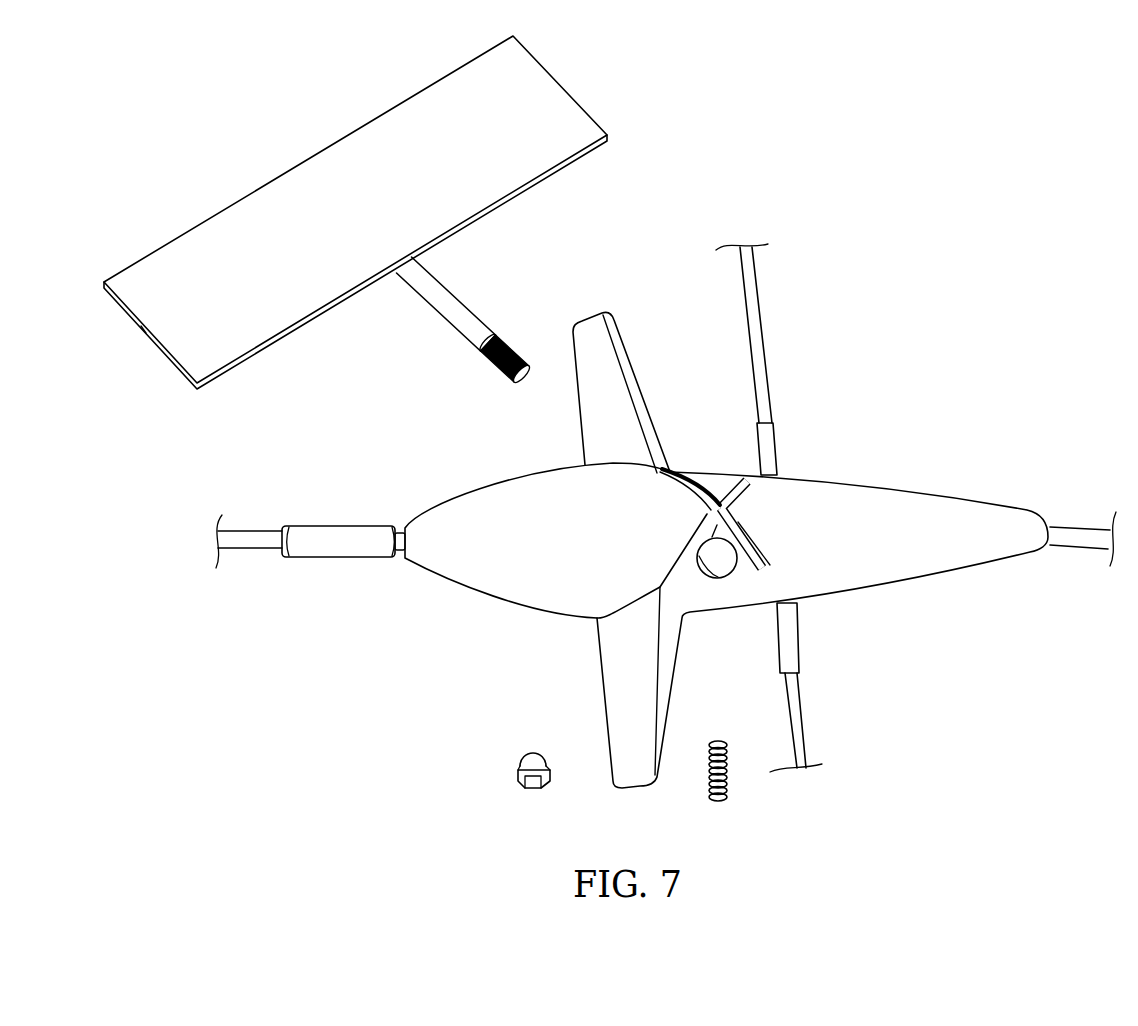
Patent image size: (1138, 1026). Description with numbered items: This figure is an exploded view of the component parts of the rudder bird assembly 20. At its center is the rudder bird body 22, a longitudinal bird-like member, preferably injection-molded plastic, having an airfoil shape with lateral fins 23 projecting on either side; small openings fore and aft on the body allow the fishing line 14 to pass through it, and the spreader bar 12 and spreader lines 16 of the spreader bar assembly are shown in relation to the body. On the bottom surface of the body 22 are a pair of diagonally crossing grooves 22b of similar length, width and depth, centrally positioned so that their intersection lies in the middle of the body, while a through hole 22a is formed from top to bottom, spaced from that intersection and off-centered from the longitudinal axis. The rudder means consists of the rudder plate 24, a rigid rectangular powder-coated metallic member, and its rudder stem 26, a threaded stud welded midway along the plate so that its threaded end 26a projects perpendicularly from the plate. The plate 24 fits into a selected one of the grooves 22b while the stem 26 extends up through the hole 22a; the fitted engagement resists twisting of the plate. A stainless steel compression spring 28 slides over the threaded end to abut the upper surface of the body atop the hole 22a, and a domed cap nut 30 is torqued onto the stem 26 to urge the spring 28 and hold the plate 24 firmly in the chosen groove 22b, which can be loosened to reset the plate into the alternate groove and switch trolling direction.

The spreader bar 12 is at (762, 335).
The fishing line 14 is at (250, 553).
The spreader lines 16 is at (1080, 527).
The rudder bird assembly 20 is at (291, 767).
The rudder bird body 22 is at (440, 578).
The through hole 22a is at (725, 568).
The diagonal grooves 22b is at (720, 493).
The lateral fins 23 is at (622, 333).
The rudder plate 24 is at (202, 212).
The rudder stem 26 is at (462, 297).
The rod tip 26a is at (498, 375).
The compression spring 28 is at (728, 797).
The domed cap nut 30 is at (518, 773).